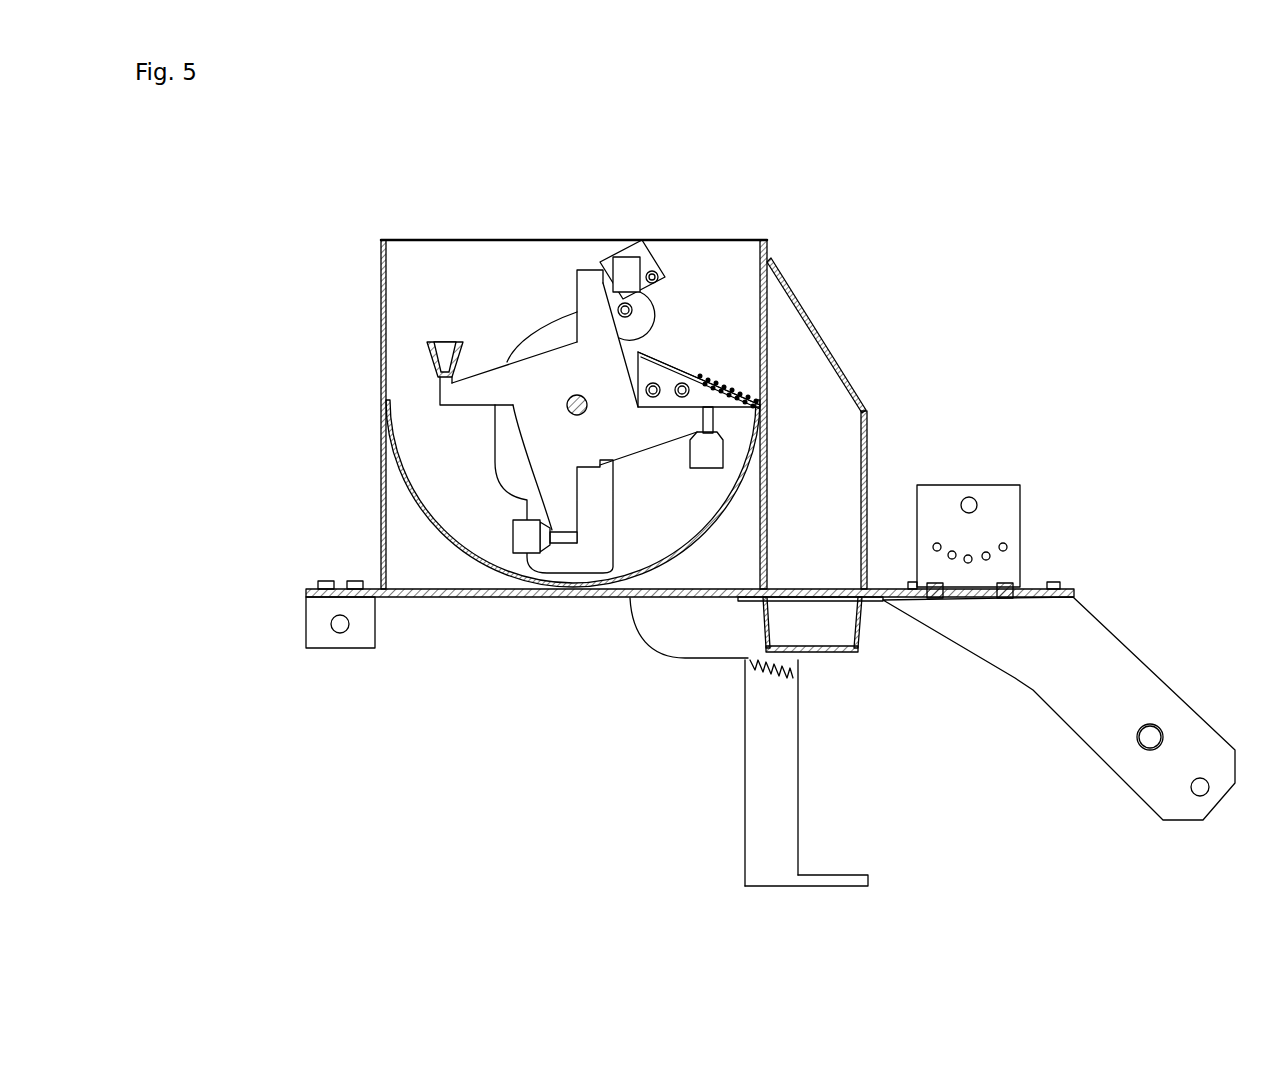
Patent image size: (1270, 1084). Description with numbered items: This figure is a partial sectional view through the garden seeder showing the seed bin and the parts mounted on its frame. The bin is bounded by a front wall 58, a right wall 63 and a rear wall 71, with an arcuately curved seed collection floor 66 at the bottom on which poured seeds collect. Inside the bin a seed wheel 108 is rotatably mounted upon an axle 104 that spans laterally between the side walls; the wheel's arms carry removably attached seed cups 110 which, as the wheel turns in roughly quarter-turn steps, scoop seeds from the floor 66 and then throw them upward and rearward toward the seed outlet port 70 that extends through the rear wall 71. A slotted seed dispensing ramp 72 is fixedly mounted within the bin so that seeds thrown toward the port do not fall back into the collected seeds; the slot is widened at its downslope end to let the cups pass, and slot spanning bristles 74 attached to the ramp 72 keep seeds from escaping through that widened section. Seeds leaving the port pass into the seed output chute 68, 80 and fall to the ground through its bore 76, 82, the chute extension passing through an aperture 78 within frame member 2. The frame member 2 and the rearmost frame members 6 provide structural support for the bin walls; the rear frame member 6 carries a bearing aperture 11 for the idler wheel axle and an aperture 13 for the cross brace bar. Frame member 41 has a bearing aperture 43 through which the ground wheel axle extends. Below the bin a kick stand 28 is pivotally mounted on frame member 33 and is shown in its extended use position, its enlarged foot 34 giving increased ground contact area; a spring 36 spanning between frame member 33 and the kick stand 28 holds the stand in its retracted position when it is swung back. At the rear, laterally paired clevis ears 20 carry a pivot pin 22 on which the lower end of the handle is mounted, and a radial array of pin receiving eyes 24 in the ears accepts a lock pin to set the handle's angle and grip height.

The frame member 2 is at (898, 600).
The rearmost frame member 6 is at (1085, 643).
The bearing aperture 11 is at (1150, 740).
The aperture 13 is at (1200, 790).
The clevis ears 20 is at (1010, 490).
The pivot pin 22 is at (978, 505).
The pin receiving eyes 24 is at (1003, 548).
The kick stand 28 is at (787, 810).
The frame member 33 is at (665, 613).
The foot 34 is at (818, 878).
The spring 36 is at (790, 675).
The frame member 41 is at (311, 638).
The bearing aperture 43 is at (335, 622).
The front wall 58 is at (382, 280).
The right wall 63 is at (442, 258).
The seed collection floor 66 is at (410, 463).
The seed output chute 68 is at (835, 362).
The seed outlet port 70 is at (760, 307).
The rear wall 71 is at (767, 470).
The seed dispensing ramp 72 is at (700, 375).
The bristles 74 is at (740, 393).
The chute bore 76 is at (820, 465).
The aperture 78 is at (820, 592).
The seed output chute 80 is at (866, 627).
The chute bore 82 is at (808, 620).
The axle 104 is at (575, 410).
The seed wheel 108 is at (557, 488).
The seed cups 110 is at (634, 255).